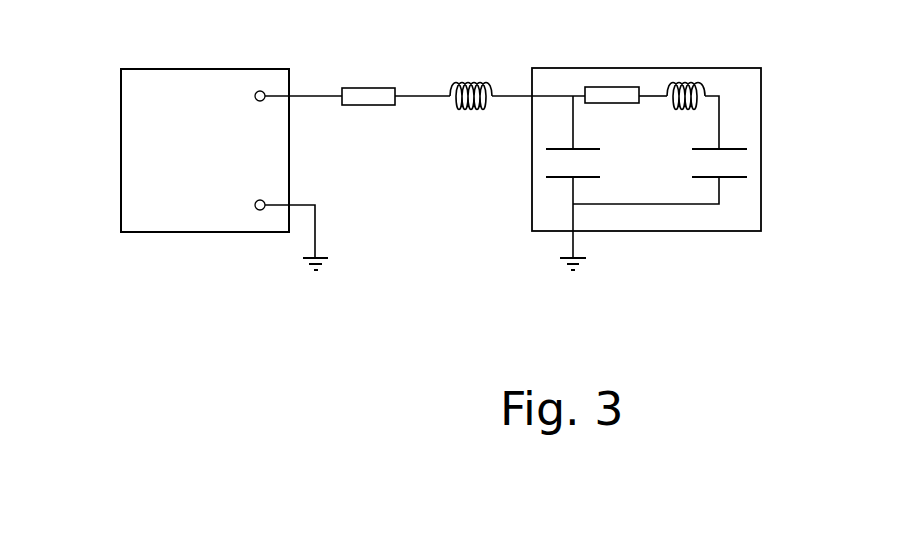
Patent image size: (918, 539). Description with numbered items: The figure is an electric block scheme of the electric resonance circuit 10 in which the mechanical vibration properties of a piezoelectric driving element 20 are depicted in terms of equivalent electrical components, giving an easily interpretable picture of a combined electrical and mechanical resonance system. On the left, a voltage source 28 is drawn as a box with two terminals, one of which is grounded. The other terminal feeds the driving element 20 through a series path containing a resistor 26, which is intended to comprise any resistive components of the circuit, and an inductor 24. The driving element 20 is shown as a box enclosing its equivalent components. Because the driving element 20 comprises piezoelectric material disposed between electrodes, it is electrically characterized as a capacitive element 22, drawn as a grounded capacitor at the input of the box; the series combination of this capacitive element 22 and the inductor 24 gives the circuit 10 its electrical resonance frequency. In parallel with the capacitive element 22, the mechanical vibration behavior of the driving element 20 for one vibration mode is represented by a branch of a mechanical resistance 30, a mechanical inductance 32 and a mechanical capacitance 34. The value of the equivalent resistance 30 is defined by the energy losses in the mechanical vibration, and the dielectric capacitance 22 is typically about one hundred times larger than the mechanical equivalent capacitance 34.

The electric resonance circuit 10 is at (303, 330).
The piezoelectric driving element 20 is at (733, 226).
The capacitive element 22 is at (556, 178).
The inductor 24 is at (482, 84).
The resistor 26 is at (369, 88).
The voltage source 28 is at (130, 170).
The mechanical resistance 30 is at (613, 88).
The mechanical inductance 32 is at (694, 82).
The mechanical capacitance 34 is at (735, 178).